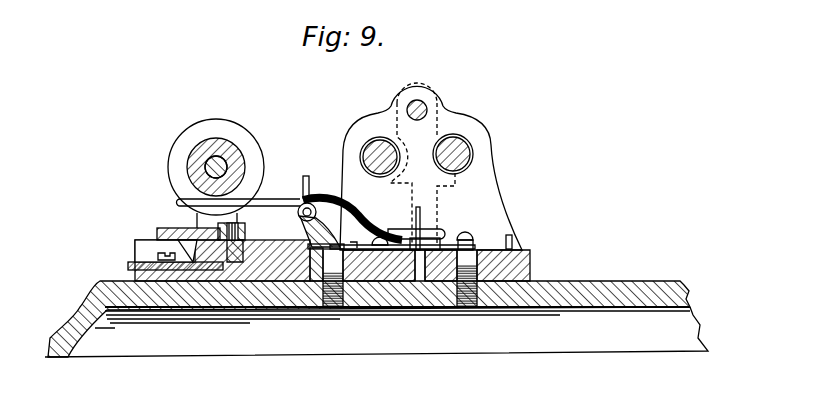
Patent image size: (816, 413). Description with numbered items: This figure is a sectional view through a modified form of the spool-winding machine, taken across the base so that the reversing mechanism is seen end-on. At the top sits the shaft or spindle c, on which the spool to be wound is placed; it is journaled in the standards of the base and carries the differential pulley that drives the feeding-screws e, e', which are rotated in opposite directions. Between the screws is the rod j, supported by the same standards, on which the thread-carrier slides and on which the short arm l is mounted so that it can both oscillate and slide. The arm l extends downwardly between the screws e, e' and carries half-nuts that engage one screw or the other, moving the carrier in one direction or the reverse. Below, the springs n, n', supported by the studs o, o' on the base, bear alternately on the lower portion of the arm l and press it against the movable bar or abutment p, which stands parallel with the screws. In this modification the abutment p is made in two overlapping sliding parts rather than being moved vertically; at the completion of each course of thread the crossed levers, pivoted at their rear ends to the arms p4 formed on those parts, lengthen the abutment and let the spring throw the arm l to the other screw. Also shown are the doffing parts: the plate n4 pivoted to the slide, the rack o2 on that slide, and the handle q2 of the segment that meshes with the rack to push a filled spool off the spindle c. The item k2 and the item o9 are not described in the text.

The shaft or spindle c is at (187, 170).
The roller shaft k2 is at (245, 162).
The arm o9 is at (275, 200).
The arm p4 is at (418, 208).
The plate n4 is at (186, 240).
The rack o2 is at (244, 226).
The handle q2 is at (130, 264).
The rod j is at (427, 108).
The feeding-screw e is at (374, 161).
The feeding-screw e' is at (463, 156).
The stud o is at (381, 223).
The short arm l is at (432, 228).
The spring n' is at (448, 216).
The stud o' is at (475, 223).
The spring n is at (389, 223).
The movable bar or abutment p is at (417, 281).